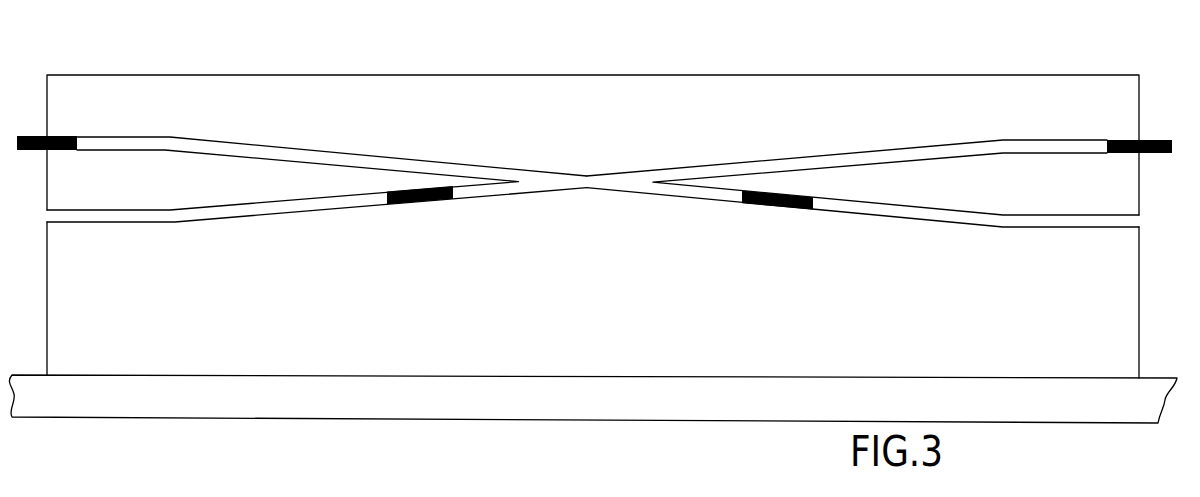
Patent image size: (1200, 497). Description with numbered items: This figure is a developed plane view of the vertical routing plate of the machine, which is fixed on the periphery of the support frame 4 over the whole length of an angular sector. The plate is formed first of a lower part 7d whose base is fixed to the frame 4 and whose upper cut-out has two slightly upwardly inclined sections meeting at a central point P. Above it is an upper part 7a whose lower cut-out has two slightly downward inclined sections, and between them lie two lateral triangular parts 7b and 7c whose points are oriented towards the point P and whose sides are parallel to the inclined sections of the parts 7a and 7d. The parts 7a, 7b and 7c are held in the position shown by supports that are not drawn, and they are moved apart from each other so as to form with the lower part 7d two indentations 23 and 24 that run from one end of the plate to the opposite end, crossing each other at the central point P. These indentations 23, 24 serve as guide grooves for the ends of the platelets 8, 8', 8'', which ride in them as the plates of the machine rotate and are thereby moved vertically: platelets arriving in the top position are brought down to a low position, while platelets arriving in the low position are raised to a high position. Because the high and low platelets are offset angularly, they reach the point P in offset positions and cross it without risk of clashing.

The support frame 4 is at (322, 410).
The upper part of routing plate 7a is at (591, 101).
The lateral triangular part 7b is at (985, 194).
The lateral triangular part 7c is at (287, 187).
The lower part of routing plate 7d is at (597, 328).
The platelet 8 is at (1147, 120).
The platelet 8' is at (777, 230).
The platelet 8'' is at (420, 228).
The indentation 23 is at (115, 143).
The indentation 24 is at (120, 219).
The central point P is at (582, 200).